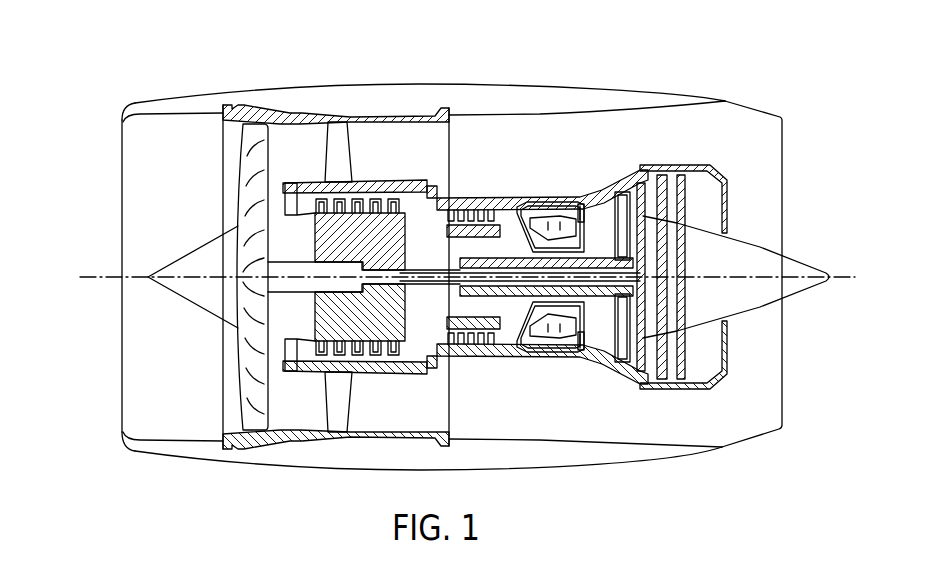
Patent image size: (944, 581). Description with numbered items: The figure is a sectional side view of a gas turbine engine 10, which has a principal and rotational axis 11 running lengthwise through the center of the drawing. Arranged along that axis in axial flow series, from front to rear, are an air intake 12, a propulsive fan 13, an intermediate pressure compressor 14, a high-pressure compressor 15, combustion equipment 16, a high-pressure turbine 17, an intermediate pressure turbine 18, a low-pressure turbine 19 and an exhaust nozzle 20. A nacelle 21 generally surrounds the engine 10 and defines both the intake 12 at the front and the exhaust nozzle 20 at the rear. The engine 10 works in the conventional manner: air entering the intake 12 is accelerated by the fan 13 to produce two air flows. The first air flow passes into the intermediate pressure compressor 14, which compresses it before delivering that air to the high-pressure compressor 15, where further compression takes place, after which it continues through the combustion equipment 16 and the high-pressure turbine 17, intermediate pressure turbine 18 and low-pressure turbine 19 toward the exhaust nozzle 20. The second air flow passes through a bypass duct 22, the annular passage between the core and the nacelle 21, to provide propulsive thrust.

The gas turbine engine 10 is at (110, 162).
The principal and rotational axis 11 is at (100, 277).
The air intake 12 is at (183, 116).
The propulsive fan 13 is at (238, 390).
The intermediate pressure compressor 14 is at (364, 352).
The high-pressure compressor 15 is at (470, 213).
The combustion equipment 16 is at (535, 340).
The high-pressure turbine 17 is at (583, 350).
The intermediate pressure turbine 18 is at (600, 193).
The low-pressure turbine 19 is at (632, 380).
The exhaust nozzle 20 is at (782, 428).
The nacelle 21 is at (587, 86).
The bypass duct 22 is at (412, 164).